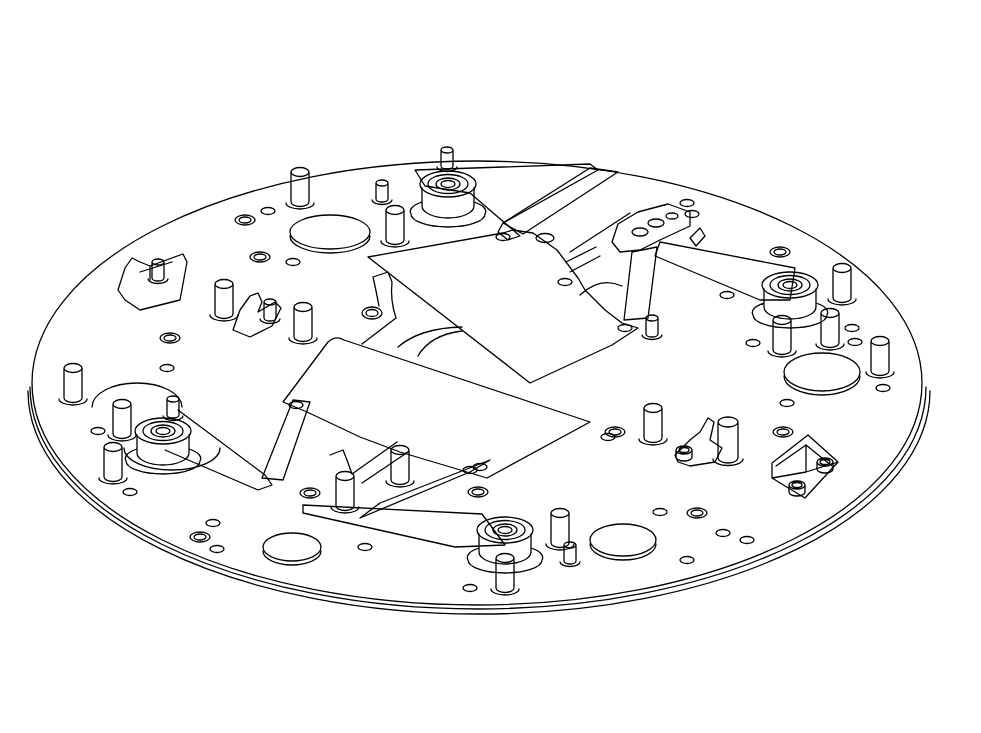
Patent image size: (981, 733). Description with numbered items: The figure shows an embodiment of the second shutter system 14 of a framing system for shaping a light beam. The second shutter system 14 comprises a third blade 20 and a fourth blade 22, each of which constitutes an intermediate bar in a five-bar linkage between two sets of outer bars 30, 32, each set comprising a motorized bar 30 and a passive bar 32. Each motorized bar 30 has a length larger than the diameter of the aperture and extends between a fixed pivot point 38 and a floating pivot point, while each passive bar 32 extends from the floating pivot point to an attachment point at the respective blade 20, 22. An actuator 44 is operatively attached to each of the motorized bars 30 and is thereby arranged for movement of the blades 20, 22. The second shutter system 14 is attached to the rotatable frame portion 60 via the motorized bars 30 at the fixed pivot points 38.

The second shutter system 14 is at (230, 167).
The third blade 20 is at (538, 283).
The fourth blade 22 is at (340, 387).
The motorized bar 30 is at (507, 178).
The passive bar 32 is at (553, 193).
The fixed pivot point 38 is at (449, 182).
The actuator 44 is at (166, 459).
The rotatable frame portion 60 is at (735, 210).